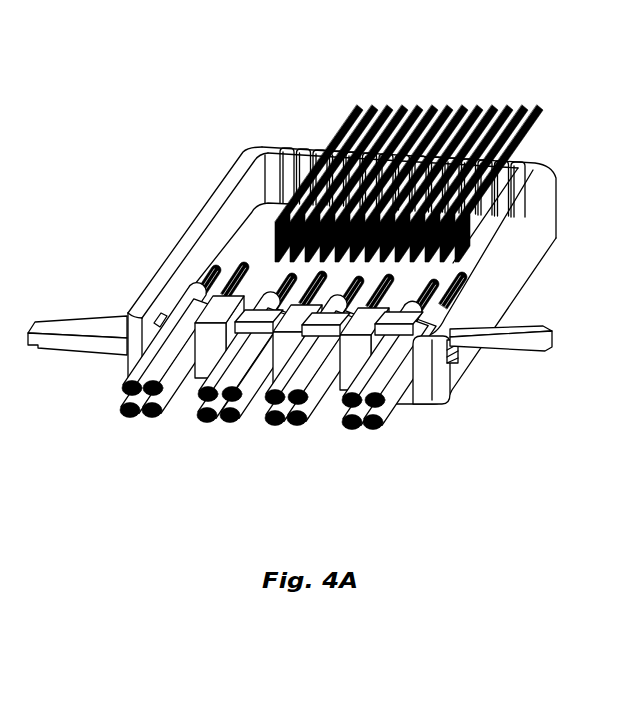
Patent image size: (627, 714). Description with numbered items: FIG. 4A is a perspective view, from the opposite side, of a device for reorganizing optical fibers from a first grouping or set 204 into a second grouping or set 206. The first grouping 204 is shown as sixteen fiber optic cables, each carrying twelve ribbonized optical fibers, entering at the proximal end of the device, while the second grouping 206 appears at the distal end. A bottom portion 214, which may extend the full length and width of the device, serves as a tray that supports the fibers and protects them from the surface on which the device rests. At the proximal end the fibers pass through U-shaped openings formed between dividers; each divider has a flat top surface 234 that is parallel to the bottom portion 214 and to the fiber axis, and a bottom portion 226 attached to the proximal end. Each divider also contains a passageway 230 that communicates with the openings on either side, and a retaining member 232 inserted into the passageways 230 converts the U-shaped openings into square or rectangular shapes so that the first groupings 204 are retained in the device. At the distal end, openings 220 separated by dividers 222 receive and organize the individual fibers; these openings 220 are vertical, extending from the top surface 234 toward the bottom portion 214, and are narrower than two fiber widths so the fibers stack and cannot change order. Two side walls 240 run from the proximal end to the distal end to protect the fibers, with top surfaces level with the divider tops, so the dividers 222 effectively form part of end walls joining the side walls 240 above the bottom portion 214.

The first grouping or set of optical fibers 204 is at (412, 409).
The second grouping or set of optical fibers 206 is at (496, 108).
The bottom portion 214 is at (268, 256).
The openings at the distal end 220 is at (505, 178).
The dividers at the distal end 222 is at (292, 148).
The bottom portion of the dividers 226 is at (193, 384).
The passageway 230 is at (458, 352).
The retaining member 232 is at (546, 328).
The top surface 234 is at (352, 326).
The side walls 240 is at (231, 188).